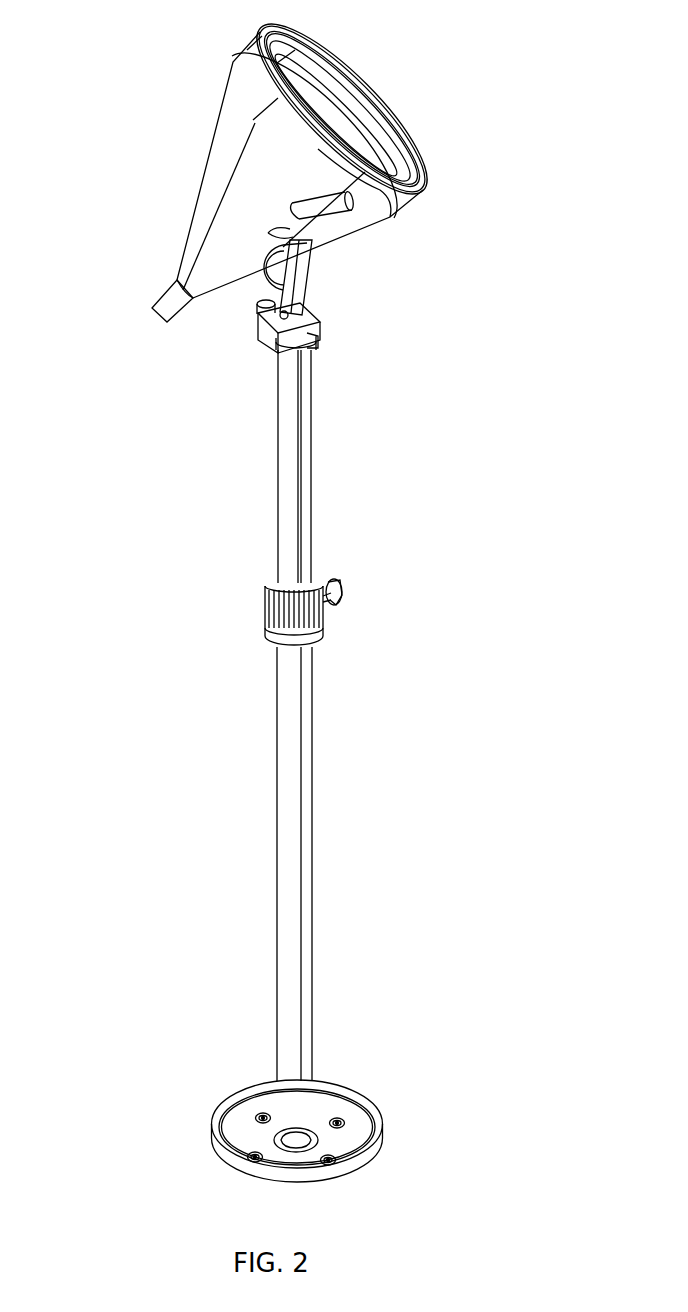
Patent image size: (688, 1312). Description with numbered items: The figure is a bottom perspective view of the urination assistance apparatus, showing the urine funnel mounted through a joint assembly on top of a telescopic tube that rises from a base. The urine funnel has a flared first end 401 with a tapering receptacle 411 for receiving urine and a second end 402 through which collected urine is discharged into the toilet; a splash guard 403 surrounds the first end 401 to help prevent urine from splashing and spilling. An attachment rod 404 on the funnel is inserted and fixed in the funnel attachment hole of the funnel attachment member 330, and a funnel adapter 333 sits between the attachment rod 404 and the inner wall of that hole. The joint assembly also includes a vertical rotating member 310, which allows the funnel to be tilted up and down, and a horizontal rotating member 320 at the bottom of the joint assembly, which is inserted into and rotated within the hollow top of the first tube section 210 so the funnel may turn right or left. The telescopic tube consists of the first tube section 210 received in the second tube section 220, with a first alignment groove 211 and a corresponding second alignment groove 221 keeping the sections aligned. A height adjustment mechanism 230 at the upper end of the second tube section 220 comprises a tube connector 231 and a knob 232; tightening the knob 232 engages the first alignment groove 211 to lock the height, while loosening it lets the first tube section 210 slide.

The flared first end 401 is at (272, 162).
The second end 402 is at (160, 270).
The splash guard 403 is at (407, 157).
The attachment rod 404 is at (323, 232).
The tapering receptacle 411 is at (227, 145).
The hinge drum 333 is at (312, 255).
The funnel attachment member 330 is at (308, 280).
The vertical rotating member 310 is at (297, 312).
The horizontal rotating member 320 is at (303, 335).
The first tube section 210 is at (339, 466).
The first alignment groove 211 is at (305, 475).
The height adjustment mechanism 230 is at (302, 615).
The tube connector 231 is at (342, 592).
The knob 232 is at (323, 625).
The second tube section 220 is at (340, 864).
The second alignment groove 221 is at (305, 825).